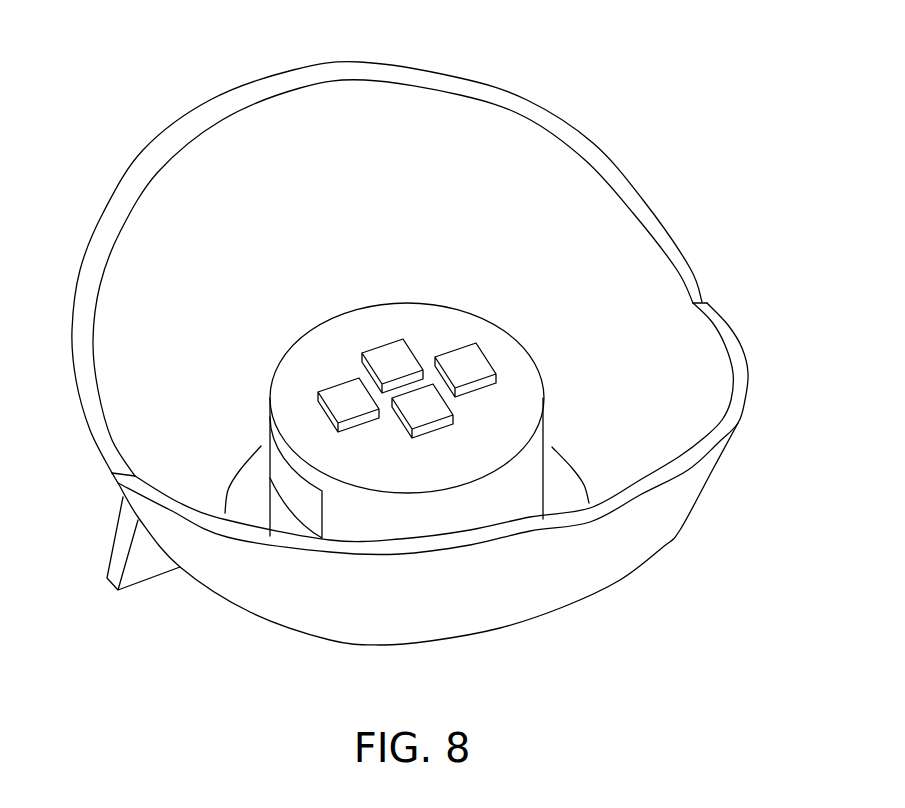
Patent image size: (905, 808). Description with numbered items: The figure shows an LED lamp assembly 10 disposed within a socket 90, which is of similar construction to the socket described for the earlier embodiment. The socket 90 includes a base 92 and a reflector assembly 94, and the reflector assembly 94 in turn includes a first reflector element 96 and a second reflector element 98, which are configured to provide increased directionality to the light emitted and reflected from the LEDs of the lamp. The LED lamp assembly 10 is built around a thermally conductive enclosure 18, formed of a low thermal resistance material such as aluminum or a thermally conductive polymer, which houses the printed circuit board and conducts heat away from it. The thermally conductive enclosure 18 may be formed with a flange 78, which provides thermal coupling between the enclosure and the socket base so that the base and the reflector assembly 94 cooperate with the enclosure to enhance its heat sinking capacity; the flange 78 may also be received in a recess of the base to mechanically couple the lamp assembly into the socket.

The socket 90 is at (535, 100).
The first reflector element 96 is at (108, 232).
The reflector assembly 94 is at (277, 110).
The second reflector element 98 is at (697, 478).
The flange 78 is at (512, 510).
The base 92 is at (115, 547).
The thermally conductive enclosure 18 is at (267, 440).
The LED lamp assembly 10 is at (542, 318).